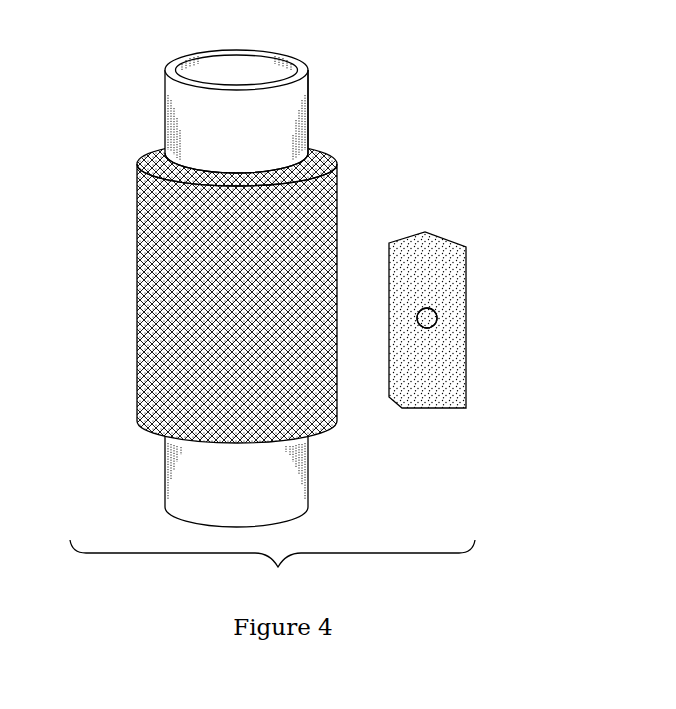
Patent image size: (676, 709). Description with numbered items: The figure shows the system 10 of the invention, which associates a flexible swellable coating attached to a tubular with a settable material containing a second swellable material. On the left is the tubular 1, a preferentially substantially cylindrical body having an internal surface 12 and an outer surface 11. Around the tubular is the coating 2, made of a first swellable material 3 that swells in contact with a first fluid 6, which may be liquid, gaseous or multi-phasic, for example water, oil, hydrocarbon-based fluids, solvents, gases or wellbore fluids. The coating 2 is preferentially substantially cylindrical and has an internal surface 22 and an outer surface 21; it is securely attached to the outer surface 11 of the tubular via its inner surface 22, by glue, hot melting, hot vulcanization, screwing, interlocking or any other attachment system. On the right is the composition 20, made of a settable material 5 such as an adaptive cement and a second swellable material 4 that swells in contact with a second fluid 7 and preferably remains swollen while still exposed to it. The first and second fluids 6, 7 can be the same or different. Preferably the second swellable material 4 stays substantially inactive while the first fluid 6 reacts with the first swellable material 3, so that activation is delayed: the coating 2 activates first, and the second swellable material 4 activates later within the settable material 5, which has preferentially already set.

The tubular 1 is at (244, 87).
The coating 2 is at (239, 292).
The first swellable material 3 is at (239, 292).
The second swellable material 4 is at (471, 333).
The settable material 5 is at (457, 320).
The first fluid 6 is at (239, 292).
The second fluid 7 is at (436, 320).
The system 10 is at (272, 284).
The outer surface of the tubular 11 is at (296, 98).
The internal surface of the tubular 12 is at (225, 75).
The composition 20 is at (442, 337).
The outer surface of the coating 21 is at (330, 240).
The internal surface of the coating 22 is at (279, 164).